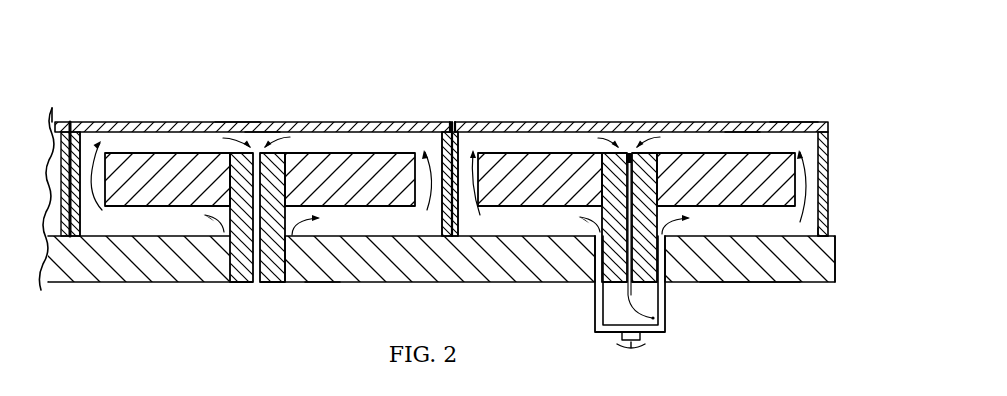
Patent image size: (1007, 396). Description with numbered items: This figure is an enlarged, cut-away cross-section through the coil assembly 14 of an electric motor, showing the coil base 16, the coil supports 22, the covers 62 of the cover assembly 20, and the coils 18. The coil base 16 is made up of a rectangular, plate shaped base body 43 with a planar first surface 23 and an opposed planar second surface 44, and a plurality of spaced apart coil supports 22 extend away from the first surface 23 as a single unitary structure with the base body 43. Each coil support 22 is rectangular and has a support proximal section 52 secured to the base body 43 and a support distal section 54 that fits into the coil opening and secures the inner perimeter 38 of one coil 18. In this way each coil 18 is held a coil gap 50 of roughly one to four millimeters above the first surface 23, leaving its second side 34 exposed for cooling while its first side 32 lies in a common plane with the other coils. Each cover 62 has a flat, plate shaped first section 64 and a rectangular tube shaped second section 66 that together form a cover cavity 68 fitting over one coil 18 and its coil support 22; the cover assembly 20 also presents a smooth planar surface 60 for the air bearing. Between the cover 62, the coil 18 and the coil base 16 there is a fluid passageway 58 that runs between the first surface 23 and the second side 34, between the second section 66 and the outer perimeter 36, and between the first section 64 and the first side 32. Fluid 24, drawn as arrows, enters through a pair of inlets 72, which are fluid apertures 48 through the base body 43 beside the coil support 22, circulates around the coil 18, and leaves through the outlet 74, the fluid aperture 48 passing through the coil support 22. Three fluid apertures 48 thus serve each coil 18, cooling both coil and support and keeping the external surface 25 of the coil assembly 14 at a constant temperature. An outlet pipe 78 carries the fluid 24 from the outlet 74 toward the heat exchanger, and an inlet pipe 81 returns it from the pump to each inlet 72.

The coil assembly 14 is at (395, 102).
The coil base 16 is at (828, 284).
The coils 18 is at (518, 148).
The cover assembly 20 is at (461, 112).
The coil supports 22 is at (660, 158).
The first surface 23 is at (828, 236).
The fluid 24 is at (86, 150).
The external surface 25 is at (262, 130).
The first side 32 is at (578, 185).
The second side 34 is at (503, 212).
The outer perimeter 36 is at (498, 160).
The inner perimeter 38 is at (610, 150).
The base body 43 is at (836, 256).
The second surface 44 is at (745, 283).
The fluid apertures 48 is at (227, 284).
The coil gap 50 is at (334, 220).
The support proximal section 52 is at (225, 192).
The support distal section 54 is at (299, 148).
The fluid passageway 58 is at (152, 160).
The surface 60 is at (237, 112).
The covers 62 is at (368, 117).
The first section 64 is at (788, 122).
The second section 66 is at (829, 165).
The cover cavity 68 is at (698, 143).
The inlet 72 is at (595, 275).
The outlet 74 is at (622, 285).
The outlet pipe 78 is at (655, 319).
The inlet pipe 81 is at (631, 348).